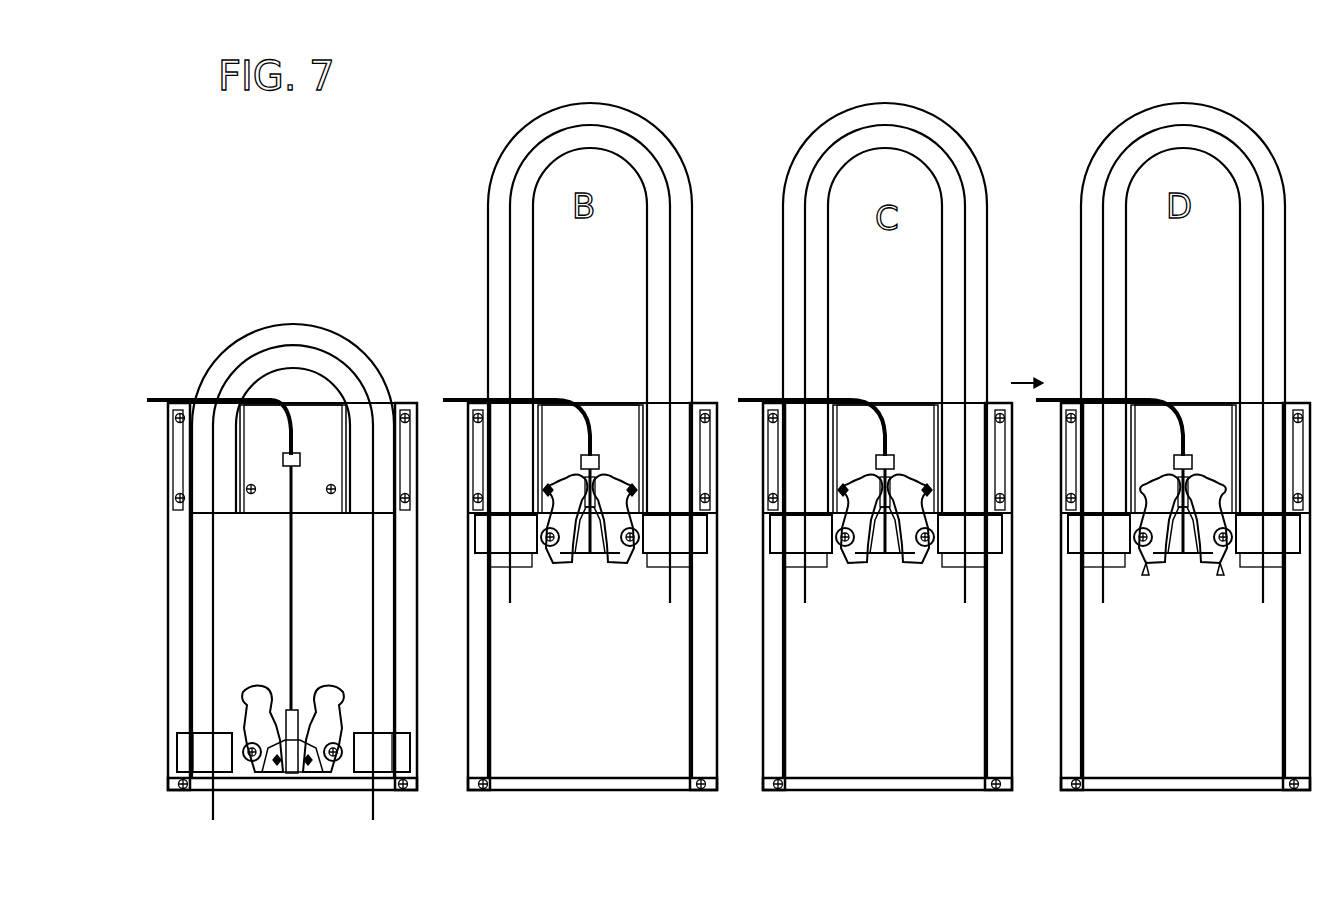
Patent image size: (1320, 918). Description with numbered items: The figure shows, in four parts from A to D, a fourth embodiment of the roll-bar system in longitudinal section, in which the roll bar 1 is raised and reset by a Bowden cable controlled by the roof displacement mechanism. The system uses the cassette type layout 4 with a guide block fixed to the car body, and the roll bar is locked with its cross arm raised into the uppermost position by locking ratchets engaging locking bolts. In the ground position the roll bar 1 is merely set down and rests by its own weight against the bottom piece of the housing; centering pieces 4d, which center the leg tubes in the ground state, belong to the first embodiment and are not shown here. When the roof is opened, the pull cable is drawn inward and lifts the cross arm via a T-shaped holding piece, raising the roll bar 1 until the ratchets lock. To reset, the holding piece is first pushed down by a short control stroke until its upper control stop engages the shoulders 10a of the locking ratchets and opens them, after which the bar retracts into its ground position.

The roll bar 1 is at (302, 437).
The cassette type layout 4 is at (302, 418).
The centering pieces 4d is at (266, 790).
The shoulders 10a is at (1178, 594).